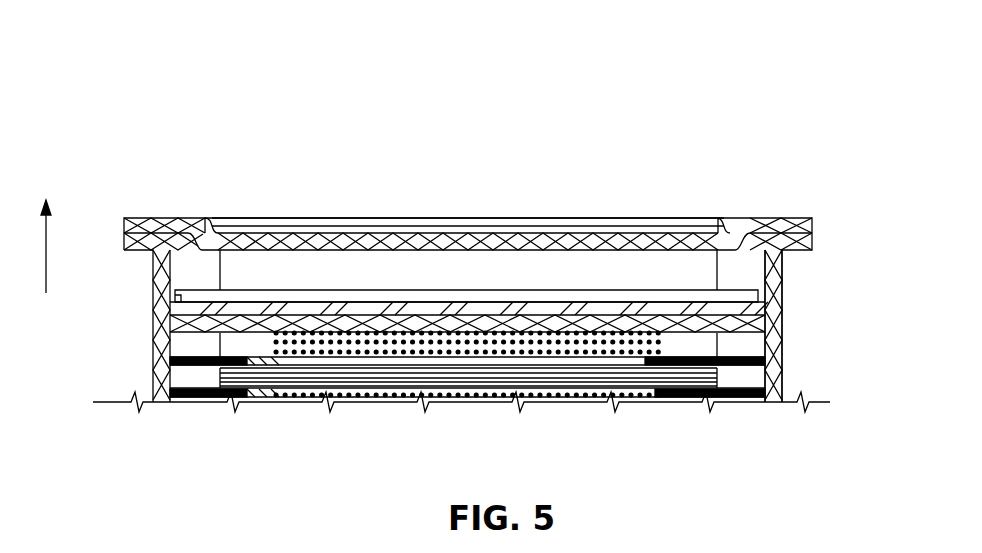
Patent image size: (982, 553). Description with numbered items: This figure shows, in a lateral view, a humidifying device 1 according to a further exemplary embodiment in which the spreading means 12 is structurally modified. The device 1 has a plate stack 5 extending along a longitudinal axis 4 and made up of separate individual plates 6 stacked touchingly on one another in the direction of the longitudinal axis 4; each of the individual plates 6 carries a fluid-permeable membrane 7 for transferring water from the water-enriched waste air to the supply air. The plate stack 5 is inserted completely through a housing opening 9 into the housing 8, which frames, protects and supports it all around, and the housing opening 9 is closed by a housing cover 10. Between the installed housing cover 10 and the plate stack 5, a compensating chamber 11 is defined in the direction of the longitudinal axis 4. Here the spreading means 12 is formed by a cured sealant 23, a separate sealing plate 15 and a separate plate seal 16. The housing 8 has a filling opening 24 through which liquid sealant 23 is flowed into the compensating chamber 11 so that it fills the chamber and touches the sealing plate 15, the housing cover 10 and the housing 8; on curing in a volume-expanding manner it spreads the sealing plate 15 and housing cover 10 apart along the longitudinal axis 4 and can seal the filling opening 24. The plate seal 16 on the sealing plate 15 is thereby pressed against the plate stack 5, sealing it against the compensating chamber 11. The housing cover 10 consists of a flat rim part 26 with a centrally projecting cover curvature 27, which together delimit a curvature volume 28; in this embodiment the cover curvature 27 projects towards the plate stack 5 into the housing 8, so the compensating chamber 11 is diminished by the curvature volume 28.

The humidifying device 1 is at (826, 140).
The longitudinal axis 4 is at (47, 237).
The plate stack 5 is at (467, 415).
The individual plates 6 is at (200, 392).
The fluid-permeable membrane 7 is at (392, 370).
The housing 8 is at (782, 320).
The housing opening 9 is at (177, 232).
The housing cover 10 is at (468, 204).
The compensating chamber 11 is at (456, 266).
The spreading means 12 is at (468, 230).
The sealing plate 15 is at (780, 295).
The plate seal 16 is at (748, 318).
The sealant 23 is at (517, 263).
The filling opening 24 is at (777, 265).
The flat rim part 26 is at (348, 217).
The cover curvature 27 is at (627, 242).
The curvature volume 28 is at (673, 222).